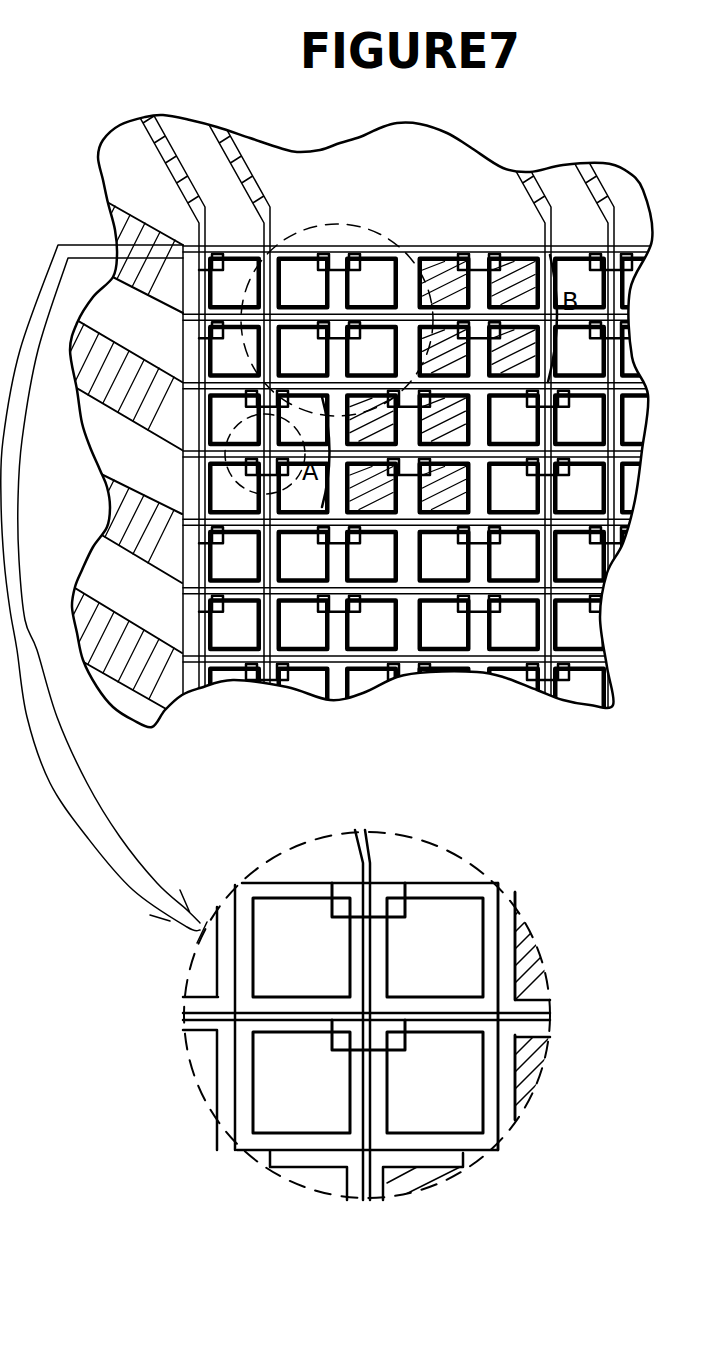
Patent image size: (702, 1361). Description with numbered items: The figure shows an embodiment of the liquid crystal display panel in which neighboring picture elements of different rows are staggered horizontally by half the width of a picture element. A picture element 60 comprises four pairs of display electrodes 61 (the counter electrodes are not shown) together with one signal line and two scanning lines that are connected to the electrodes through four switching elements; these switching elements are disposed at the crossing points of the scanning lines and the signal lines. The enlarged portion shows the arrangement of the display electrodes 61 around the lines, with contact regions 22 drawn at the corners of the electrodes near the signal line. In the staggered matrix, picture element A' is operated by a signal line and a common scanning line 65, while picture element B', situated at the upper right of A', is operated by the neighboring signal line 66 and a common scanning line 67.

The contact hole 22 is at (407, 1045).
The picture element 60 is at (123, 408).
The display electrodes 61 is at (368, 1015).
The common scanning line 65 is at (217, 468).
The signal line 66 is at (457, 173).
The common scanning line 67 is at (140, 238).